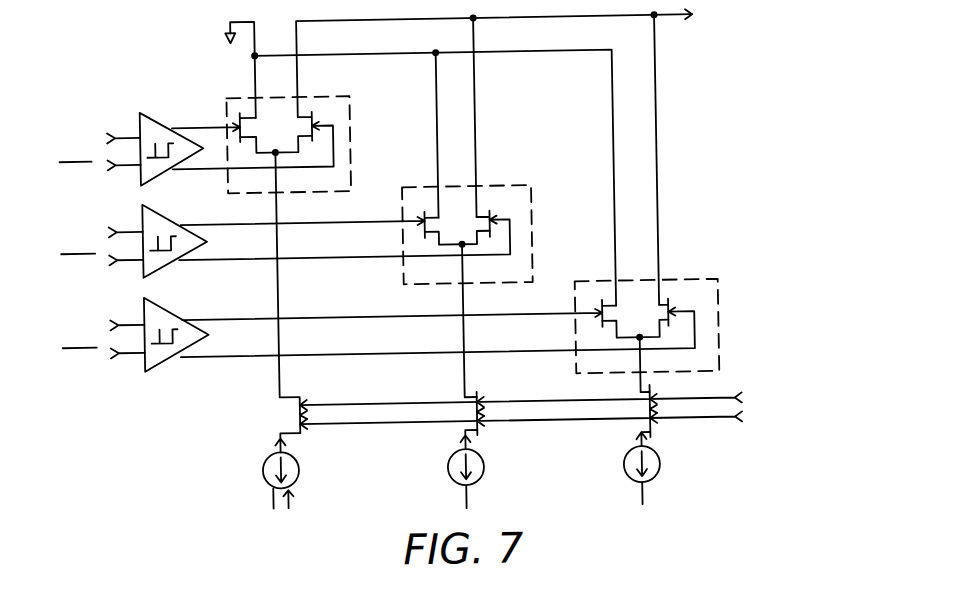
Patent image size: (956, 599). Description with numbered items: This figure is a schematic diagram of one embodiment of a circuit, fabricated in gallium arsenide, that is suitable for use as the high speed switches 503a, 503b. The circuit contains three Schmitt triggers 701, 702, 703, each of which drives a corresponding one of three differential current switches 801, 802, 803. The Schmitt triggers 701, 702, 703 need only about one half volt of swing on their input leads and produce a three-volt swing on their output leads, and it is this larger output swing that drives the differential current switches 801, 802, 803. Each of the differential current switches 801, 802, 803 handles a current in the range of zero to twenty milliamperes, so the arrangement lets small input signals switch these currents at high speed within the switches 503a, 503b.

The high speed switch 503a is at (159, 437).
The high speed switch 503b is at (448, 269).
The Schmitt trigger 701 is at (164, 118).
The Schmitt trigger 702 is at (176, 215).
The Schmitt trigger 703 is at (178, 310).
The differential current switch 801 is at (353, 94).
The differential current switch 802 is at (533, 186).
The differential current switch 803 is at (718, 283).